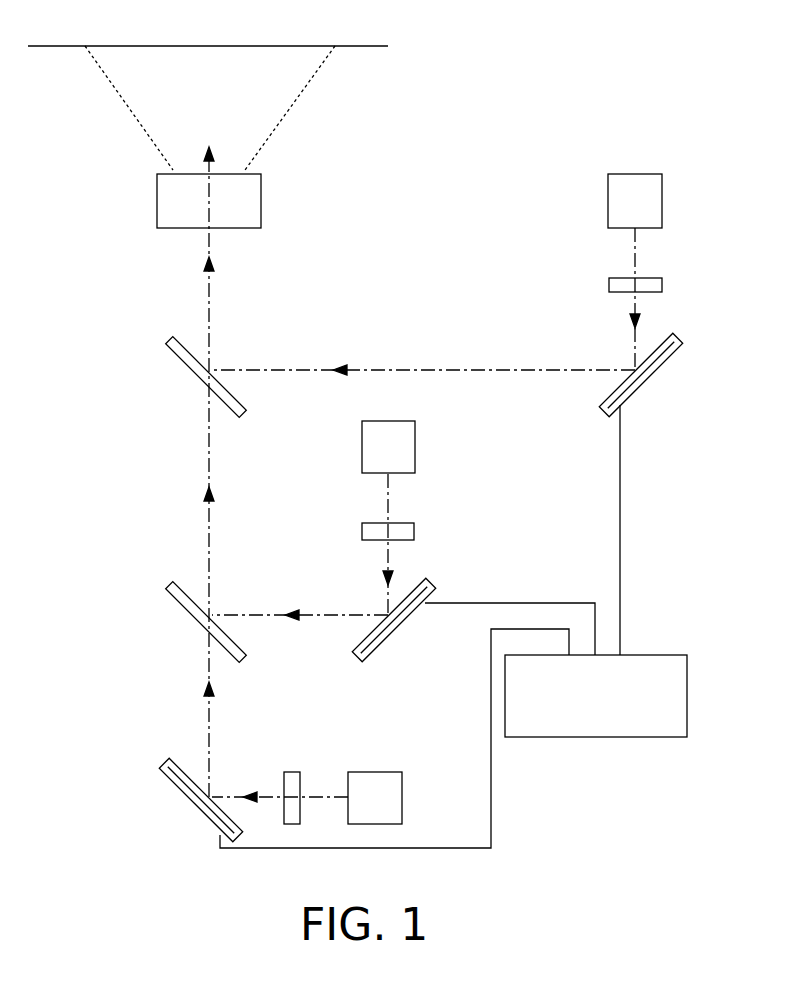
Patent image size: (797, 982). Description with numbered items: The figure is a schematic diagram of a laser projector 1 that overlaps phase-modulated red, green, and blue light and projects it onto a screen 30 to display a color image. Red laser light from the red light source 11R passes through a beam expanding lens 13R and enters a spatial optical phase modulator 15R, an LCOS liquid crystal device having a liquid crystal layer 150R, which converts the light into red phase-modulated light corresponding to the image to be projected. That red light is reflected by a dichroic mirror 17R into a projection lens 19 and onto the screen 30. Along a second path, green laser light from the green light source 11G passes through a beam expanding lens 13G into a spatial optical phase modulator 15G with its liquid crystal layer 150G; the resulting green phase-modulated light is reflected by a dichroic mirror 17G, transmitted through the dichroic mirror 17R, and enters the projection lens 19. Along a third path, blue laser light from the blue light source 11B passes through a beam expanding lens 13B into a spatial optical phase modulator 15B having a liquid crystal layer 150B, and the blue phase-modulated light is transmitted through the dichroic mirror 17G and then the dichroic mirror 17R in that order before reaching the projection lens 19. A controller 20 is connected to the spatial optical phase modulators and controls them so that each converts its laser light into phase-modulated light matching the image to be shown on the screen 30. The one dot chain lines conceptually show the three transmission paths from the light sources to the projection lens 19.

The laser projector 1 is at (451, 160).
The screen 30 is at (386, 46).
The projection lens 19 is at (260, 217).
The red light source 11R is at (660, 174).
The beam expanding lens 13R is at (661, 280).
The spatial optical phase modulator 15R is at (678, 340).
The liquid crystal layer 150R is at (642, 385).
The dichroic mirror 17R is at (190, 366).
The green light source 11G is at (413, 421).
The beam expanding lens 13G is at (413, 525).
The spatial optical phase modulator 15G is at (430, 584).
The liquid crystal layer 150G is at (370, 652).
The dichroic mirror 17G is at (190, 612).
The controller 20 is at (663, 655).
The blue light source 11B is at (378, 772).
The beam expanding lens 13B is at (300, 773).
The spatial optical phase modulator 15B is at (183, 797).
The liquid crystal layer 150B is at (210, 817).